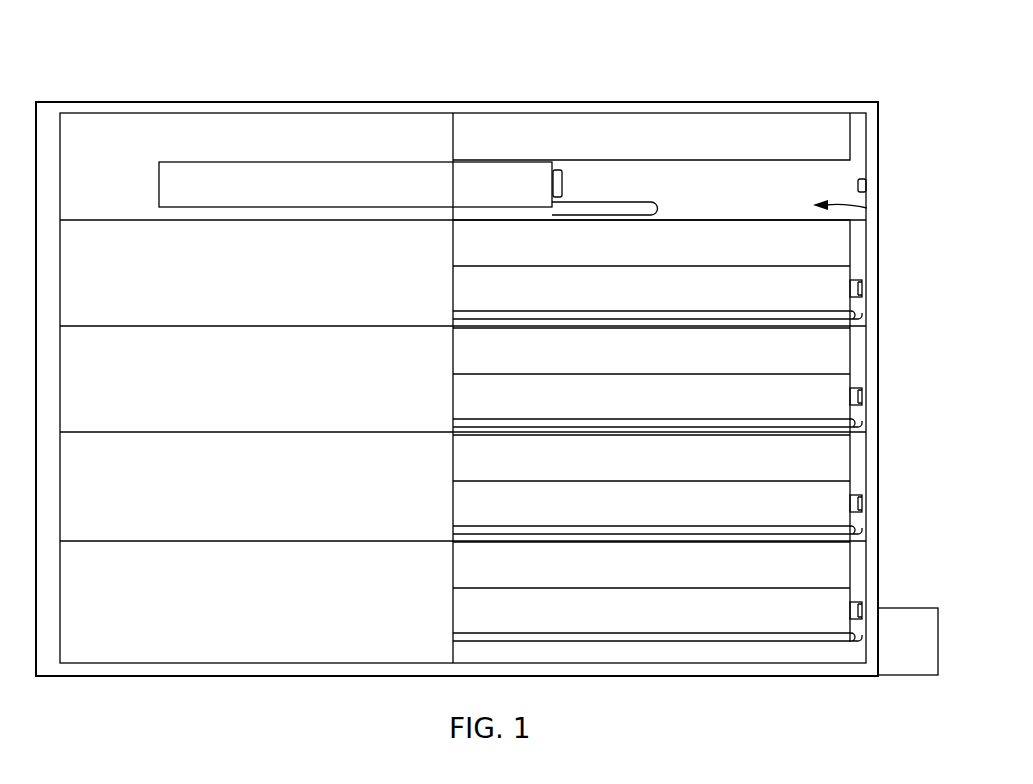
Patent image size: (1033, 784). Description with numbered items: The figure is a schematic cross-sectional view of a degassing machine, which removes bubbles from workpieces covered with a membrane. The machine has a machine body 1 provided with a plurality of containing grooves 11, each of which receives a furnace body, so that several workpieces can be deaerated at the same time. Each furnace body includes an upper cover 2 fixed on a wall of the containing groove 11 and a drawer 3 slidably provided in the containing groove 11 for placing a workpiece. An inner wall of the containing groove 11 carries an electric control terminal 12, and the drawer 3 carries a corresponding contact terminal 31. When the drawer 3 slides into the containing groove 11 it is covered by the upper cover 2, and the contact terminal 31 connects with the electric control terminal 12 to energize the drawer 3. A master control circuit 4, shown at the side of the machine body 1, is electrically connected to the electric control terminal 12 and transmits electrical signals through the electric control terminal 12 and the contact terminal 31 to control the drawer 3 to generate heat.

The machine body 1 is at (315, 102).
The upper cover 2 is at (672, 130).
The drawer 3 is at (355, 180).
The contact terminal 31 is at (560, 176).
The containing groove 11 is at (867, 208).
The electric control terminal 12 is at (866, 185).
The master control circuit 4 is at (905, 622).